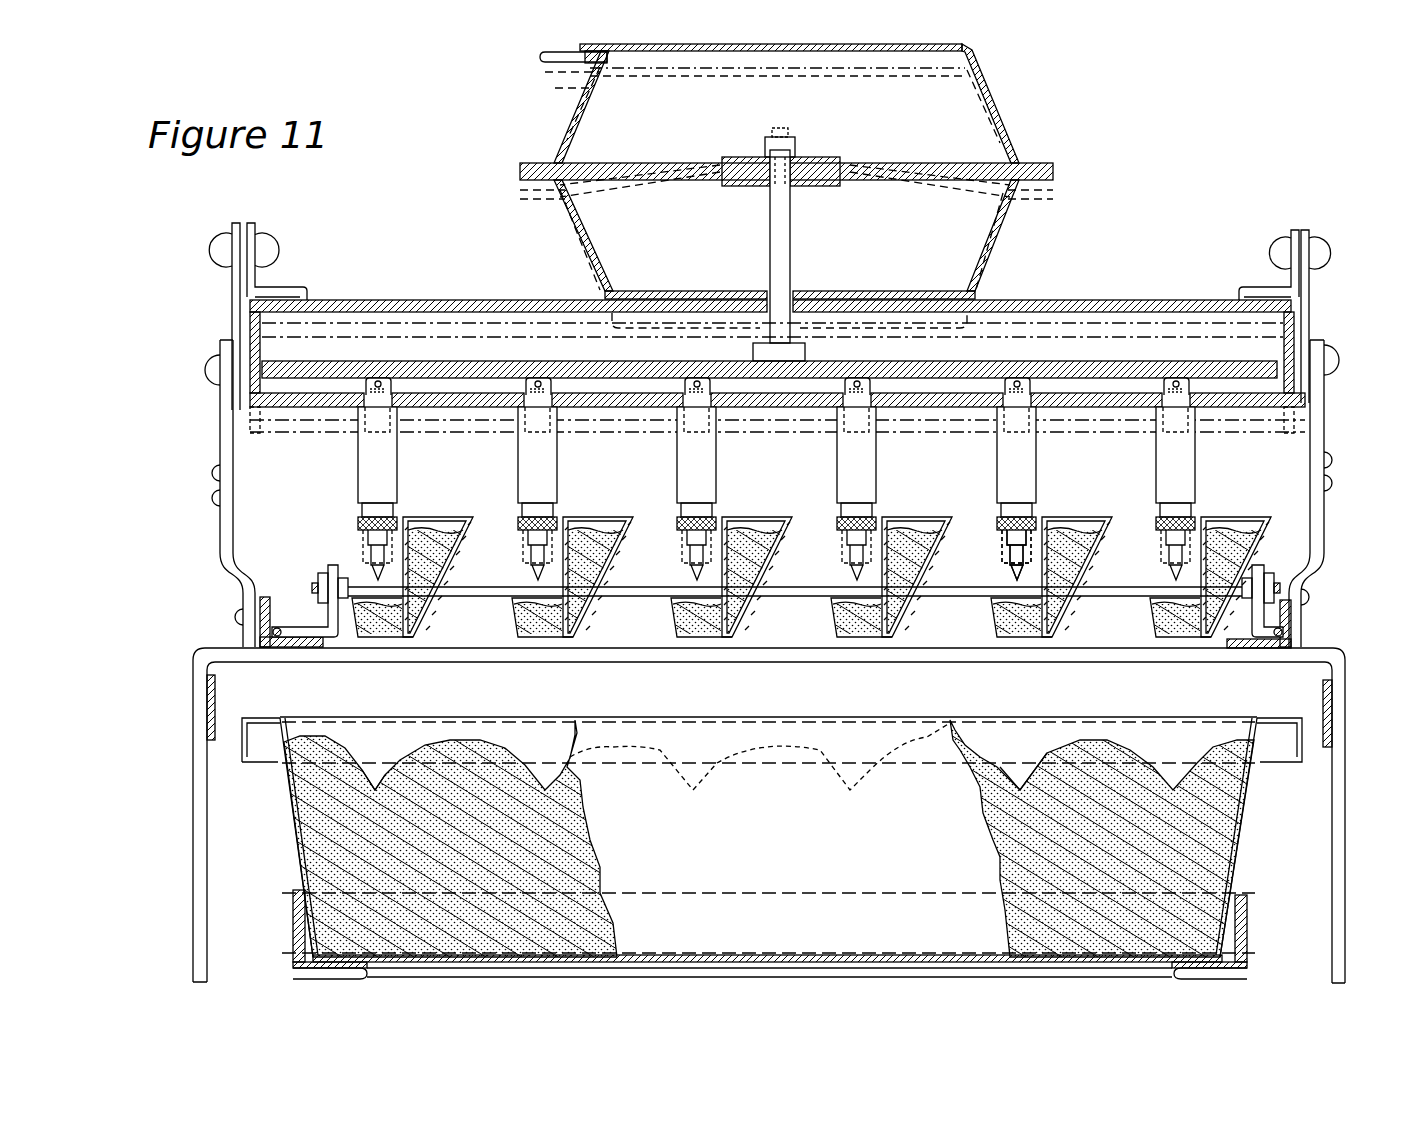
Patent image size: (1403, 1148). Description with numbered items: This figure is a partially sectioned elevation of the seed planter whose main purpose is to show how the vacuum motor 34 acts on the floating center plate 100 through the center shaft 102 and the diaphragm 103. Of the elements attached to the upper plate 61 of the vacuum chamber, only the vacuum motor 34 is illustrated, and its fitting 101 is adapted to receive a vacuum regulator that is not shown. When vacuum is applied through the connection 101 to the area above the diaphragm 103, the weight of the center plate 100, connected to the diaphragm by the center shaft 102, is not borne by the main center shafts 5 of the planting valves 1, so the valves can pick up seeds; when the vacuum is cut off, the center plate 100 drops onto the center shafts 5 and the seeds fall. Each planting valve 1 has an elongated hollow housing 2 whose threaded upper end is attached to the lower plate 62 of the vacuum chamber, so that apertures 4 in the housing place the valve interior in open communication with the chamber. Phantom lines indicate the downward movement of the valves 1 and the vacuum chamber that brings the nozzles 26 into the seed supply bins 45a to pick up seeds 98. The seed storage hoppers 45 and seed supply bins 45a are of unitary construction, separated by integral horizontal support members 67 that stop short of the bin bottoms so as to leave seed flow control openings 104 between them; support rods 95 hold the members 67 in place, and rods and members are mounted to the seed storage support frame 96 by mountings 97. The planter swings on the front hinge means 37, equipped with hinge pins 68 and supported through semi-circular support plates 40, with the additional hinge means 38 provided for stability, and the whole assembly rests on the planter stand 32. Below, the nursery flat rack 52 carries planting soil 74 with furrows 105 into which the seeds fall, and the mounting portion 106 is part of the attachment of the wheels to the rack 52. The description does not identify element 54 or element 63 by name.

The seed-planting valve 1 is at (344, 460).
The elongated housing 2 is at (560, 485).
The apertures 4 is at (545, 378).
The main center shaft 5 is at (380, 378).
The nozzle 26 is at (688, 565).
The planter stand 32 is at (193, 858).
The vacuum motor 34 is at (985, 70).
The front hinge means 37 is at (232, 290).
The hinge means 38 is at (1312, 308).
The semi-circular support plates 40 is at (237, 538).
The seed storage hoppers 45 is at (460, 557).
The seed supply bins 45a is at (670, 605).
The nursery flat rack 52 is at (293, 893).
The mold outline 54 is at (838, 718).
The upper plate 61 is at (410, 298).
The lower plate 62 is at (312, 410).
The spacer 63 is at (258, 350).
The horizontal support members 67 is at (580, 530).
The hinge pins 68 is at (262, 240).
The planting soil 74 is at (560, 860).
The support rods 95 is at (790, 600).
The seed storage support frame 96 is at (318, 622).
The mountings 97 is at (320, 568).
The seeds 98 is at (440, 530).
The center plate 100 is at (280, 363).
The fitting 101 is at (545, 65).
The center shaft 102 is at (792, 240).
The diaphragm 103 is at (905, 172).
The seed flow control openings 104 is at (415, 625).
The furrows 105 is at (538, 787).
The mounting portion 106 is at (290, 970).